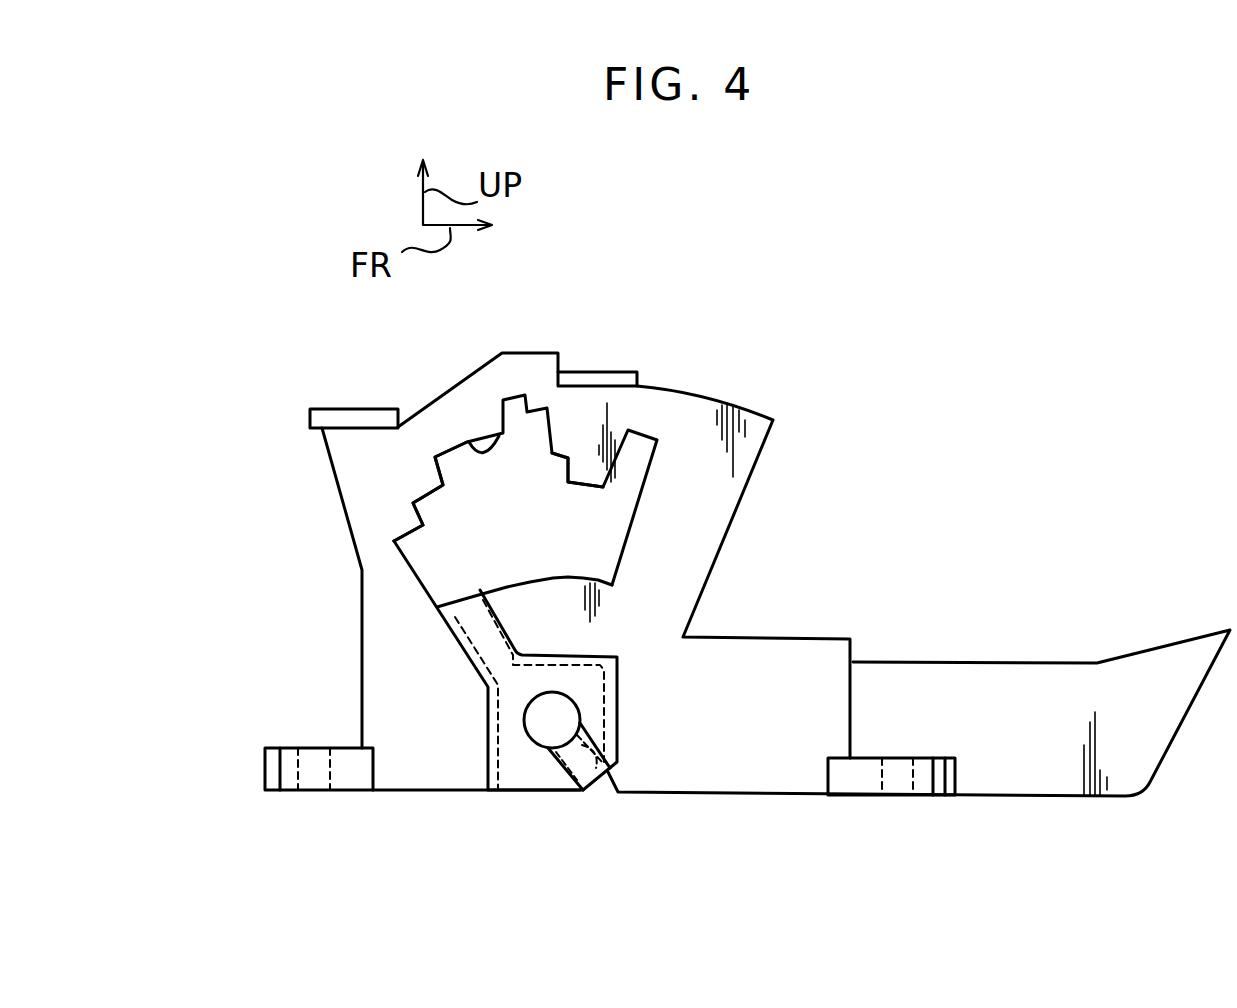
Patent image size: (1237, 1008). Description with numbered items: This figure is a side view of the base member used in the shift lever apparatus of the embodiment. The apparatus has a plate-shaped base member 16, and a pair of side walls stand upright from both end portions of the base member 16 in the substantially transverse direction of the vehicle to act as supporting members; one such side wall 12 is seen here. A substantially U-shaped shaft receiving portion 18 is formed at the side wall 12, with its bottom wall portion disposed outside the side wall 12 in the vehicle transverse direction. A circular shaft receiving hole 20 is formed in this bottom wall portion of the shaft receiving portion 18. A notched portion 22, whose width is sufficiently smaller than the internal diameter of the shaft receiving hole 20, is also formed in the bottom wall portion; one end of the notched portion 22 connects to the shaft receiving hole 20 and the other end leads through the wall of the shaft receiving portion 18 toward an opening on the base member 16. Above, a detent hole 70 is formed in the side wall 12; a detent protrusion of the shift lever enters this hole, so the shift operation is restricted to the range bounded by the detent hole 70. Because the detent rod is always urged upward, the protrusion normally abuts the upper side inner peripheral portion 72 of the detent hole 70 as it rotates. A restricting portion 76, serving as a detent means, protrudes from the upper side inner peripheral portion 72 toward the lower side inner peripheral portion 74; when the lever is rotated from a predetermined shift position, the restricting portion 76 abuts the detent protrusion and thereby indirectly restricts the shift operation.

The side wall 12 is at (375, 667).
The base member 16 is at (982, 770).
The shaft receiving portion 18 is at (532, 768).
The shaft receiving hole 20 is at (572, 712).
The notched portion 22 is at (605, 771).
The detent hole 70 is at (467, 473).
The upper side inner peripheral portion 72 is at (467, 442).
The lower side inner peripheral portion 74 is at (550, 562).
The restricting portion 76 is at (590, 487).